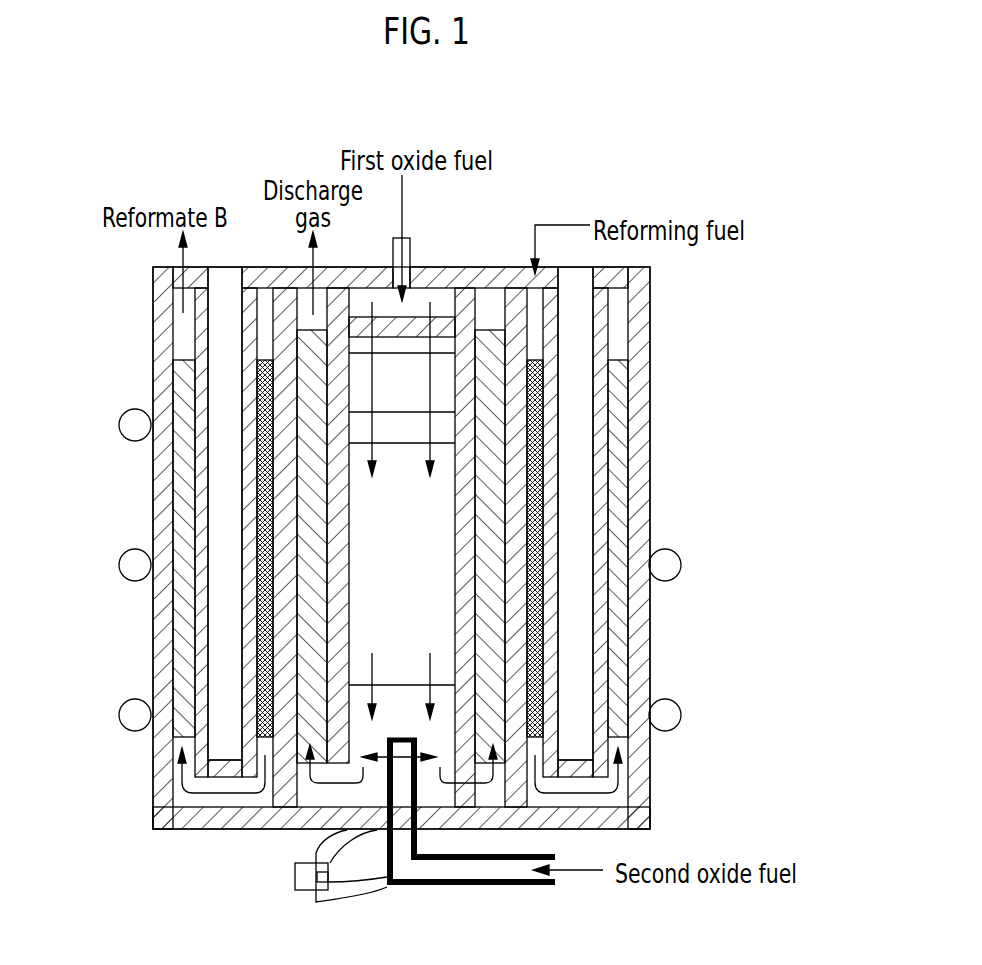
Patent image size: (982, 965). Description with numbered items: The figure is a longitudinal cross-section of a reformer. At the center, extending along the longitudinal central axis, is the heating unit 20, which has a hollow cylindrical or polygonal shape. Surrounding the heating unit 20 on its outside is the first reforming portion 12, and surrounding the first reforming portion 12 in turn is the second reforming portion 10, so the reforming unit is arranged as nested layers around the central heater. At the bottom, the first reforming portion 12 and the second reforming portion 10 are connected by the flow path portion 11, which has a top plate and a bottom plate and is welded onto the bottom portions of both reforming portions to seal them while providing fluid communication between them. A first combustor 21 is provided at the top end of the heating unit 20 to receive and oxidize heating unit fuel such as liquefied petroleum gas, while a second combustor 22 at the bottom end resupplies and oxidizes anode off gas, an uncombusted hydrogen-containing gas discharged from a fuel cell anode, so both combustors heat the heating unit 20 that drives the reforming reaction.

The second reforming portion 10 is at (615, 605).
The flow path portion 11 is at (620, 793).
The first reforming portion 12 is at (540, 678).
The heating unit 20 is at (378, 616).
The first combustor 21 is at (407, 255).
The second combustor 22 is at (397, 790).